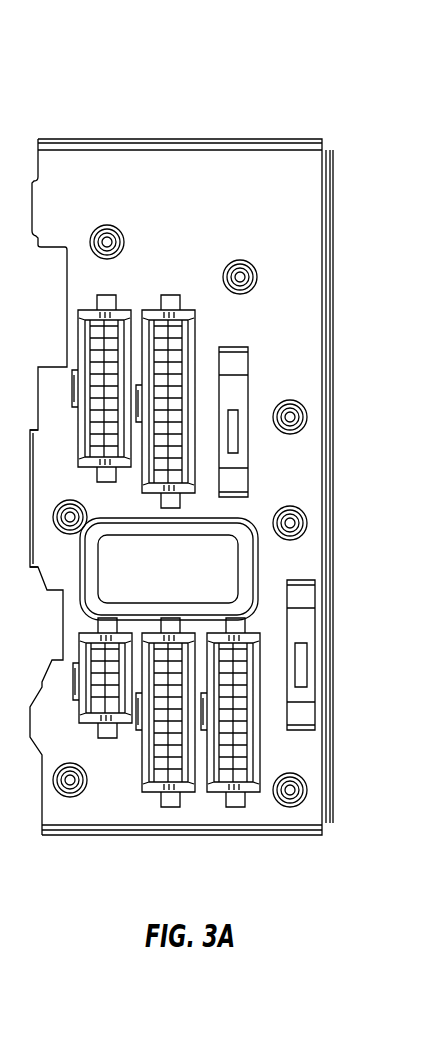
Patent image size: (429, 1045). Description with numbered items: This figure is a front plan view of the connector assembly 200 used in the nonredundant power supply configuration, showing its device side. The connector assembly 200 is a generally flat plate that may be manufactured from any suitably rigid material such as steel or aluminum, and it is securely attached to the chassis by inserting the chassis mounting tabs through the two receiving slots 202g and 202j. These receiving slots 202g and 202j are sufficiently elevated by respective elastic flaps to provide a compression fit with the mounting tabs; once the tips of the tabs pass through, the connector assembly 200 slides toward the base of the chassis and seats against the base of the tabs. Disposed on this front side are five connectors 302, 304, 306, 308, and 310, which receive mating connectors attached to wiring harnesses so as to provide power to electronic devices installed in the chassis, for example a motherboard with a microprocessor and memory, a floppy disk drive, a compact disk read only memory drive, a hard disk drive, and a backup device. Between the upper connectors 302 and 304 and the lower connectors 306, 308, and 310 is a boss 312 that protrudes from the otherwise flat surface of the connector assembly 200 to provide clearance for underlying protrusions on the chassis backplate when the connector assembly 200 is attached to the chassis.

The connector assembly 200 is at (240, 113).
The connector 302 is at (92, 310).
The connector 304 is at (180, 310).
The connector 306 is at (92, 727).
The connector 308 is at (153, 793).
The connector 310 is at (247, 793).
The boss 312 is at (217, 557).
The receiving slot 202g is at (233, 427).
The receiving slot 202j is at (300, 660).